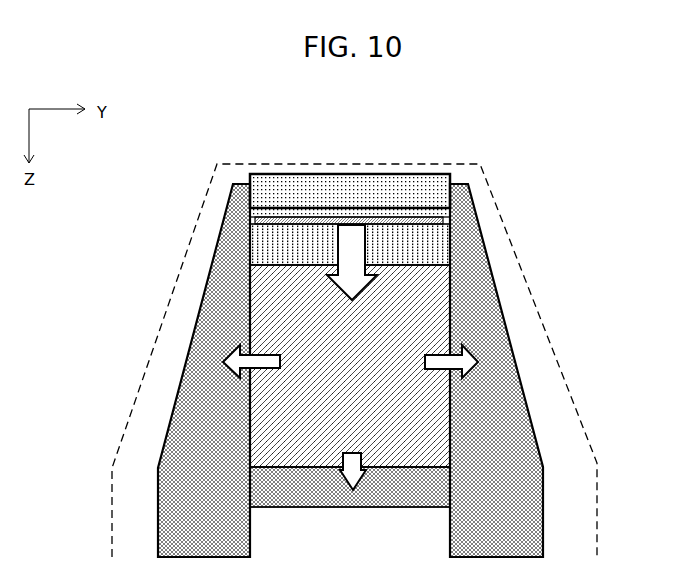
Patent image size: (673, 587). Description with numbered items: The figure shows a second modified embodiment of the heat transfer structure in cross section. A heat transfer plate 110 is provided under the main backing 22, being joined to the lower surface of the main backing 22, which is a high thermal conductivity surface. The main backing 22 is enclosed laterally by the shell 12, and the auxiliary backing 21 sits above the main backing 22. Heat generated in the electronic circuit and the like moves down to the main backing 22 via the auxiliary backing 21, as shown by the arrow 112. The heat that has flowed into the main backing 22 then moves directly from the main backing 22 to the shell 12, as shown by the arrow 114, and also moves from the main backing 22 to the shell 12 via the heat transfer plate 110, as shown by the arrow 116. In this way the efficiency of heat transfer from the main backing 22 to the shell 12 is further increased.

The shell 12 is at (545, 487).
The auxiliary backing 21 is at (452, 246).
The main backing 22 is at (452, 322).
The heat transfer plate 110 is at (327, 508).
The arrow 112 is at (363, 248).
The arrow 114 is at (477, 347).
The arrow 116 is at (347, 452).